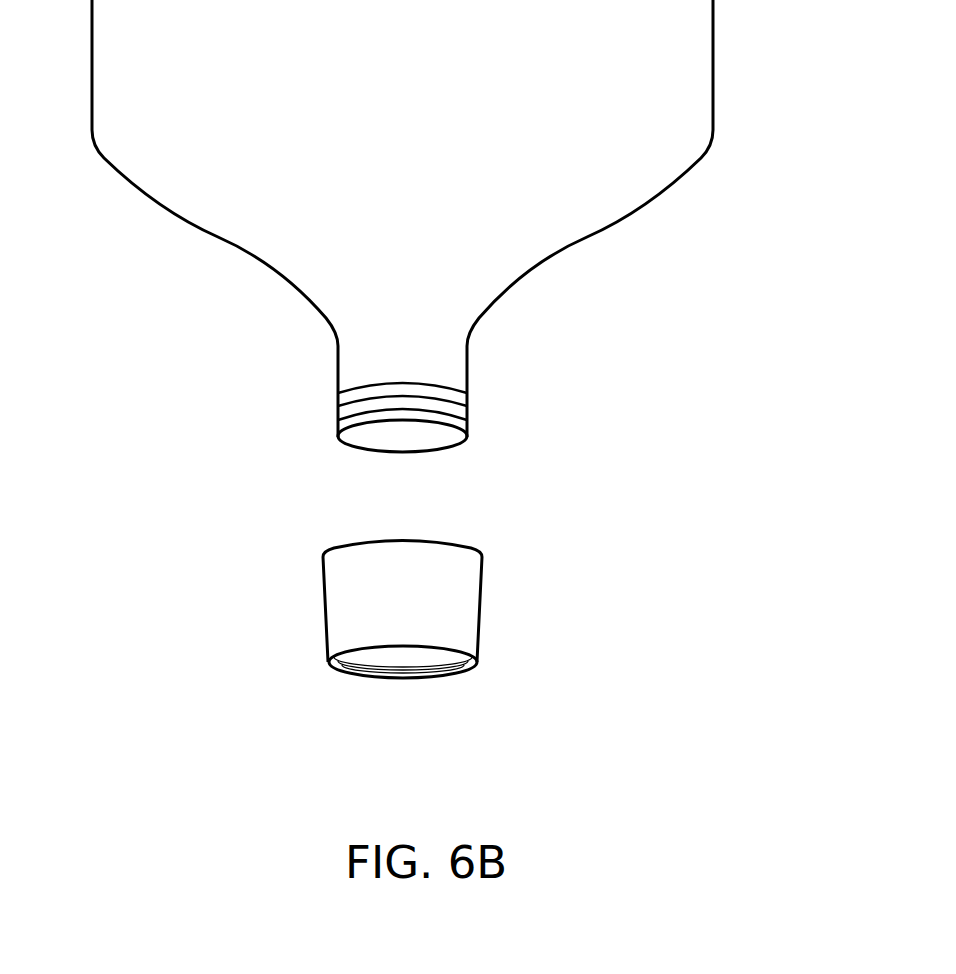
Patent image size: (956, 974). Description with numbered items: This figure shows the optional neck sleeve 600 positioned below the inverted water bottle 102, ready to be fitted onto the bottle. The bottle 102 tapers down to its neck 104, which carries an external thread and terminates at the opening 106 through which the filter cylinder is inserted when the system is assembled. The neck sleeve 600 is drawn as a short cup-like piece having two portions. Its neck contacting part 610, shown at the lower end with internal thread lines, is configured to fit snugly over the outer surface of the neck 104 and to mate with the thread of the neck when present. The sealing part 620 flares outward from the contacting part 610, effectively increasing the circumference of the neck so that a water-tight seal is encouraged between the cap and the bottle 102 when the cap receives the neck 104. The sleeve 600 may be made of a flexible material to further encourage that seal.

The water bottle 102 is at (713, 113).
The neck 104 is at (467, 408).
The opening 106 is at (443, 468).
The neck sleeve 600 is at (384, 634).
The sealing part 620 is at (478, 632).
The neck contacting part 610 is at (453, 676).